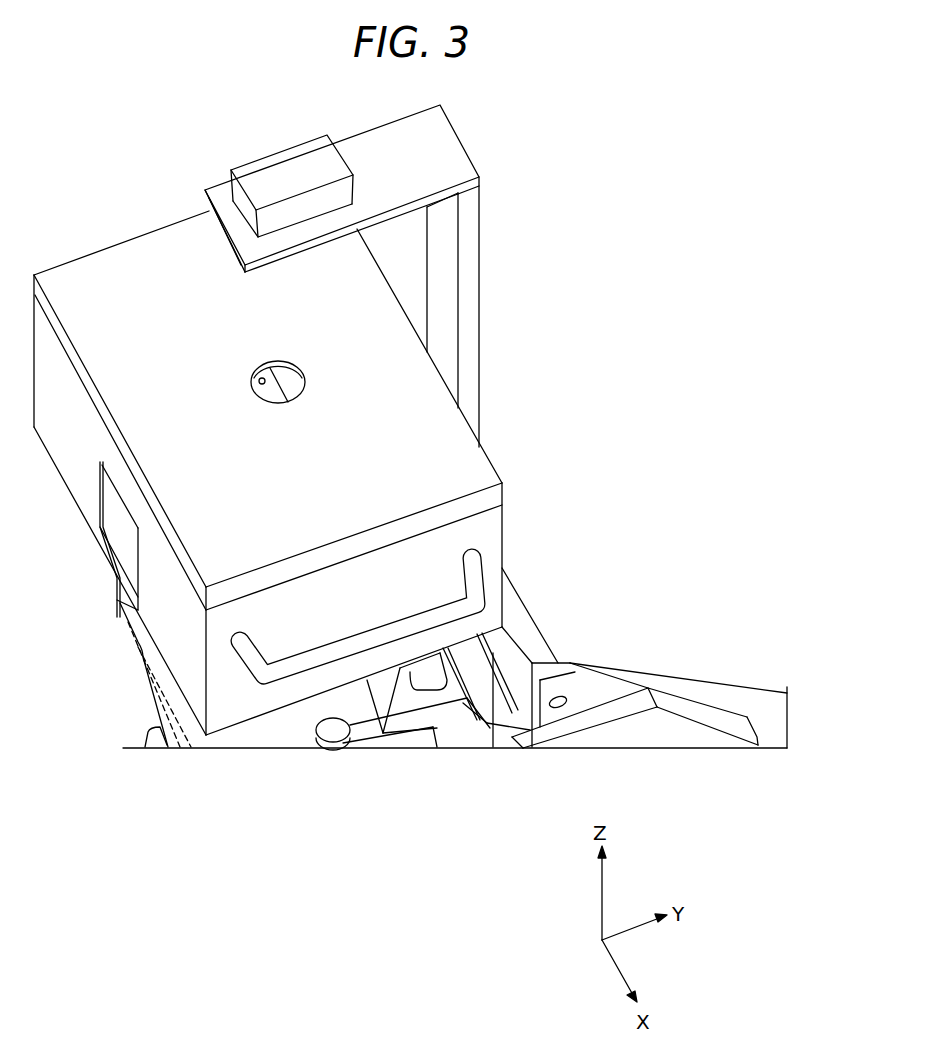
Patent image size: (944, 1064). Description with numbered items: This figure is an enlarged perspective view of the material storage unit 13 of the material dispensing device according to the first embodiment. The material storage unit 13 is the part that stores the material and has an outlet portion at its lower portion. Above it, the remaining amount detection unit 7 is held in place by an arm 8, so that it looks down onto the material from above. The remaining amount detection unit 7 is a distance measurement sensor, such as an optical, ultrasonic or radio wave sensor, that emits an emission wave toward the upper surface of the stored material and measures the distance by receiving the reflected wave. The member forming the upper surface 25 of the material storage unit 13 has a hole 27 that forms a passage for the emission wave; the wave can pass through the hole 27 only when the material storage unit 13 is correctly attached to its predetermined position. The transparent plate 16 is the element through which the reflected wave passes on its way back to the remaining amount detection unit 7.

The remaining amount detection unit 7 is at (284, 170).
The arm 8 is at (480, 292).
The material storage unit 13 is at (497, 446).
The transparent plate 16 is at (292, 378).
The upper surface 25 is at (122, 296).
The hole 27 is at (262, 380).